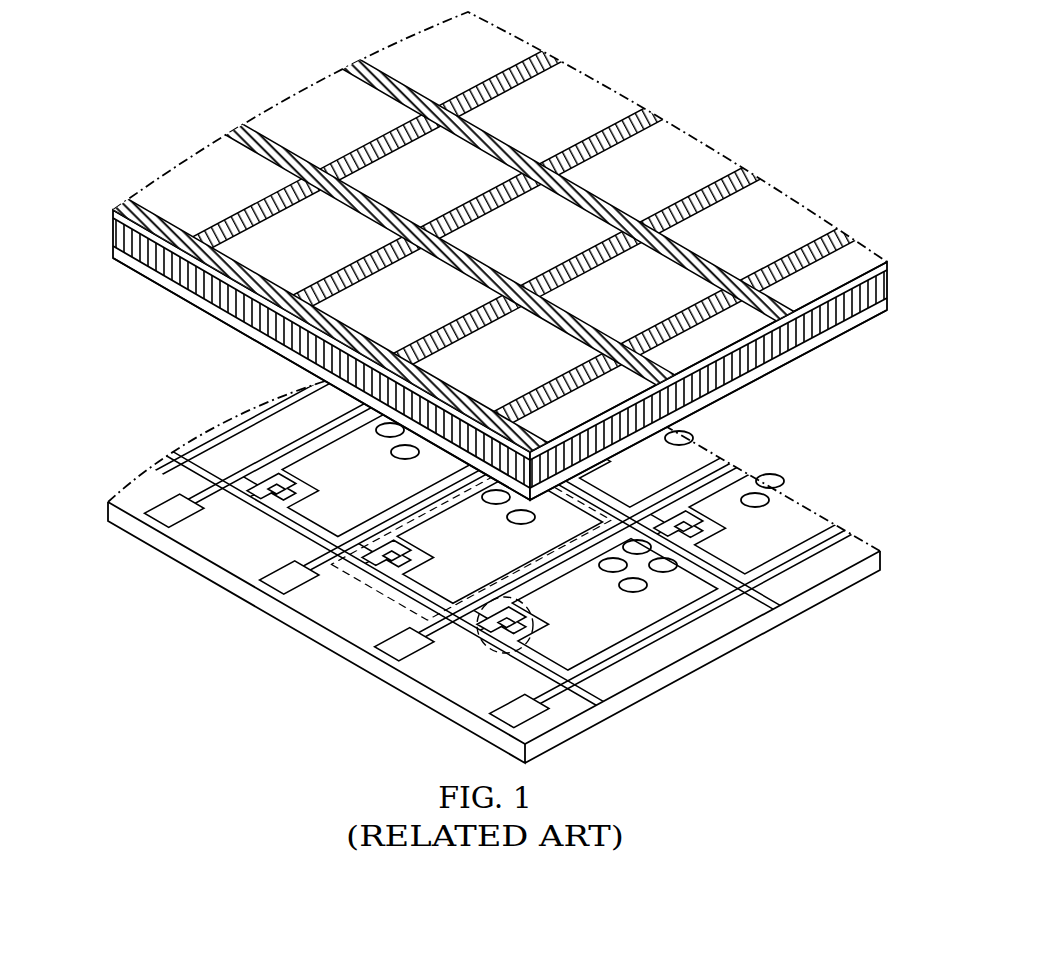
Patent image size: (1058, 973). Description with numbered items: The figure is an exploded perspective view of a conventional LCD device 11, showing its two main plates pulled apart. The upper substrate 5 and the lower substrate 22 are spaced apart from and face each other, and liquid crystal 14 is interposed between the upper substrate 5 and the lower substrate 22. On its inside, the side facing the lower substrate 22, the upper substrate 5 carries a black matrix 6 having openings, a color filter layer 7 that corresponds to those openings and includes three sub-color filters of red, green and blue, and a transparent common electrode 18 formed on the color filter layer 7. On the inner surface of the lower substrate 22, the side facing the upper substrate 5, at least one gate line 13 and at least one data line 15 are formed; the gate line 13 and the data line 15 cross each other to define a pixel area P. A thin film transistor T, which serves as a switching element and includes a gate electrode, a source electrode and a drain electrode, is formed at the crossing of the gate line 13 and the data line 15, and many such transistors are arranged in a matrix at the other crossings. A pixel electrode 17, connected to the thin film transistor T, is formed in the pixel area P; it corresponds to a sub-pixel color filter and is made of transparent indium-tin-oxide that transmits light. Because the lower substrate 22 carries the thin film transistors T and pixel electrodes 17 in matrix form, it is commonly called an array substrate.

The upper substrate 5 is at (878, 266).
The black matrix 6 is at (880, 284).
The color filter layer 7 is at (786, 218).
The common electrode 18 is at (885, 300).
The LCD device 11 is at (100, 210).
The gate line 13 is at (597, 704).
The liquid crystal 14 is at (788, 480).
The data line 15 is at (797, 522).
The pixel electrode 17 is at (655, 612).
The lower substrate 22 is at (882, 550).
The pixel area P is at (398, 600).
The thin film transistor T is at (485, 648).